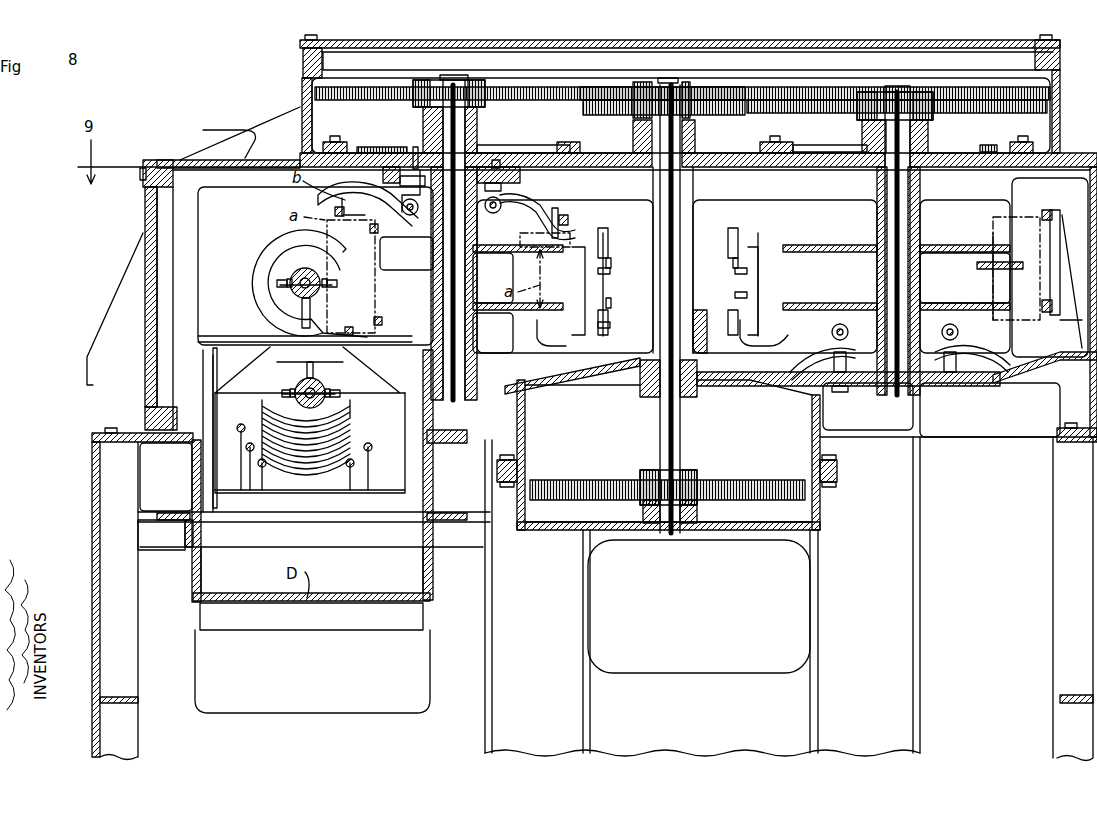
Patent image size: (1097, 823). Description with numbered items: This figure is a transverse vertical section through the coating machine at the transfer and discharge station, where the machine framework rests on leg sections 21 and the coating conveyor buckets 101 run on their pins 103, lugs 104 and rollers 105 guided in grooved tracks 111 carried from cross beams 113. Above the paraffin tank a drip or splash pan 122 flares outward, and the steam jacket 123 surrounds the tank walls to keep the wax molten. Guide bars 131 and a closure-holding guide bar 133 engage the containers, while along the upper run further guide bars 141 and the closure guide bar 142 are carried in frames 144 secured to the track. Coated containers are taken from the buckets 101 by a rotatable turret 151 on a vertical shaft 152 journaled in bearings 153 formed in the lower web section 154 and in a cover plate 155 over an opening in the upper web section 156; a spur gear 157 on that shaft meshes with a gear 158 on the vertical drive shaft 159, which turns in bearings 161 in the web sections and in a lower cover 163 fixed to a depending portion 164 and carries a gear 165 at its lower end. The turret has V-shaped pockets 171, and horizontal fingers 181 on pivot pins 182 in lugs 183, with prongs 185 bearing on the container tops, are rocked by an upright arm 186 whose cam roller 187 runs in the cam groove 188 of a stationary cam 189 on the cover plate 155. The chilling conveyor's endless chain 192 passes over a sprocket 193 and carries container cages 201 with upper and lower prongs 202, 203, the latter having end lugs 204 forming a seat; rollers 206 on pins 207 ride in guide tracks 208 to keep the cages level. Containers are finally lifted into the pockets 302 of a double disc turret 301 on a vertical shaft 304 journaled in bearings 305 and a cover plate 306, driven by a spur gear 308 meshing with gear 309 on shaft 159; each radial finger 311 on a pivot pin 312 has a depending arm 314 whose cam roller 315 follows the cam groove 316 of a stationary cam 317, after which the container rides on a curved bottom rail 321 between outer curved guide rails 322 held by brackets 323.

The leg sections 21 is at (128, 517).
The V-shaped buckets 101 is at (298, 333).
The pins 103 is at (277, 283).
The lugs 104 is at (290, 280).
The roller 105 is at (298, 285).
The grooved tracks 111 is at (305, 293).
The cross beams 113 is at (238, 343).
The drip or splash pan 122 is at (213, 443).
The steam jacket 123 is at (195, 563).
The guide bars 131 is at (262, 458).
The guide bar 133 is at (238, 443).
The guide bars 141 is at (372, 230).
The guide bar 142 is at (337, 210).
The frames 144 is at (273, 230).
The rotatable turret 151 is at (493, 303).
The vertical shaft 152 is at (463, 363).
The bearings 153 is at (470, 127).
The lower web section 154 is at (472, 398).
The cover plate 155 is at (525, 157).
The upper web section 156 is at (600, 160).
The spur gear 157 is at (560, 67).
The gear 158 is at (720, 92).
The vertical drive shaft 159 is at (664, 188).
The bearings 161 is at (695, 137).
The lower cover 163 is at (597, 525).
The depending portion 164 is at (519, 448).
The gear 165 is at (722, 478).
The V-shaped pockets 171 is at (545, 279).
The horizontal fingers 181 is at (390, 200).
The pivot pins 182 is at (494, 213).
The lugs 183 is at (411, 215).
The prongs 185 is at (560, 218).
The upright arm 186 is at (535, 193).
The cam roller 187 is at (518, 183).
The cam groove 188 is at (410, 167).
The stationary cam 189 is at (403, 170).
The endless chain 192 is at (600, 286).
The sprocket 193 is at (700, 327).
The container cages 201 is at (588, 327).
The upper prongs 202 is at (827, 213).
The lower prongs 203 is at (562, 337).
The end lugs 204 is at (537, 330).
The rollers 206 is at (612, 270).
The pins 207 is at (610, 252).
The guide tracks 208 is at (607, 235).
The double disc turret 301 is at (965, 278).
The V-shaped pockets 302 is at (797, 249).
The vertical shaft 304 is at (893, 202).
The bearings 305 is at (918, 131).
The cover plate 306 is at (937, 163).
The spur gear 308 is at (814, 110).
The gear 309 is at (712, 112).
The radial finger 311 is at (830, 348).
The pivot pin 312 is at (958, 332).
The depending arm 314 is at (830, 374).
The cam roller 315 is at (840, 373).
The cam groove 316 is at (832, 389).
The stationary cam 317 is at (860, 388).
The curved bottom rail 321 is at (1055, 362).
The outer curved guide rails 322 is at (1045, 214).
The brackets 323 is at (1067, 252).